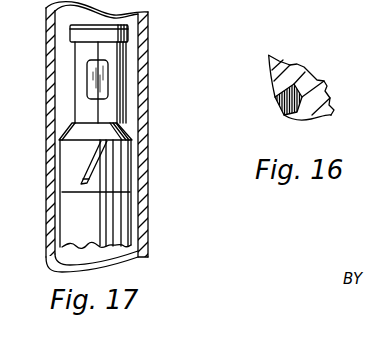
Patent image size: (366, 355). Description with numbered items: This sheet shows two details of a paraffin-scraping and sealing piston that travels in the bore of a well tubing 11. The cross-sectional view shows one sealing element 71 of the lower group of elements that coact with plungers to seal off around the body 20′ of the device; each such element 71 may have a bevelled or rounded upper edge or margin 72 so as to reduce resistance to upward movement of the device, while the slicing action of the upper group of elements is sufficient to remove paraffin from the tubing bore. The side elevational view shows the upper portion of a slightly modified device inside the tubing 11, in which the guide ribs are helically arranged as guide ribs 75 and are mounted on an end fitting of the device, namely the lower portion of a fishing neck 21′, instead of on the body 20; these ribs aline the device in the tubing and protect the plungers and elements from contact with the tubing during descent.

In FIG. 17, the well tubing 11 is at (148, 72).
In FIG. 17, the body 20 is at (71, 136).
In FIG. 17, the fishing neck 21' is at (54, 82).
In FIG. 17, the helically arranged guide ribs 75 is at (134, 162).
In FIG. 16, the body 20' is at (311, 85).
In FIG. 16, the bevelled or rounded upper edge 72 is at (274, 105).
In FIG. 16, the sealing element 71 is at (293, 120).